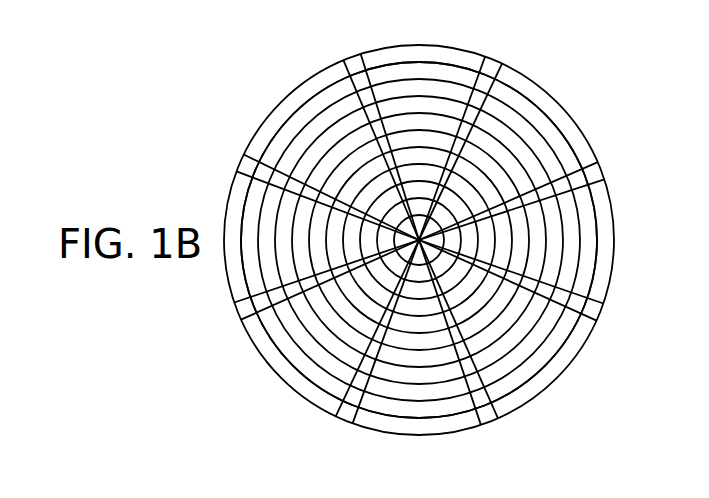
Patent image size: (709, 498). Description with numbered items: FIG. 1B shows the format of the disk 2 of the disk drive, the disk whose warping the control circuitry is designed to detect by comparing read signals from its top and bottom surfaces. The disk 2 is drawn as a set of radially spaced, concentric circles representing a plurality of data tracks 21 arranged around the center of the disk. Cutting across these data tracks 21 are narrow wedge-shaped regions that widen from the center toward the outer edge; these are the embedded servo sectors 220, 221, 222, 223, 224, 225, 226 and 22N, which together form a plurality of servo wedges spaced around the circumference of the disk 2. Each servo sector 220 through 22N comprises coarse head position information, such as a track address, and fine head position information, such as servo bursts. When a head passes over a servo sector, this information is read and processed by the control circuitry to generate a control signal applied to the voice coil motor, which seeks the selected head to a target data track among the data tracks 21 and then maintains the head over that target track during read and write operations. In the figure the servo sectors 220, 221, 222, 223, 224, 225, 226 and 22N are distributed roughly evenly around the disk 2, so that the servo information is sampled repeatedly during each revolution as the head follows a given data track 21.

The disk 2 is at (533, 74).
The data tracks 21 is at (448, 72).
The embedded servo sector 220 is at (351, 57).
The embedded servo sector 221 is at (494, 62).
The embedded servo sector 222 is at (603, 170).
The embedded servo sector 223 is at (598, 316).
The embedded servo sector 224 is at (490, 421).
The embedded servo sector 225 is at (344, 420).
The embedded servo sector 226 is at (240, 313).
The embedded servo sector 22N is at (243, 164).